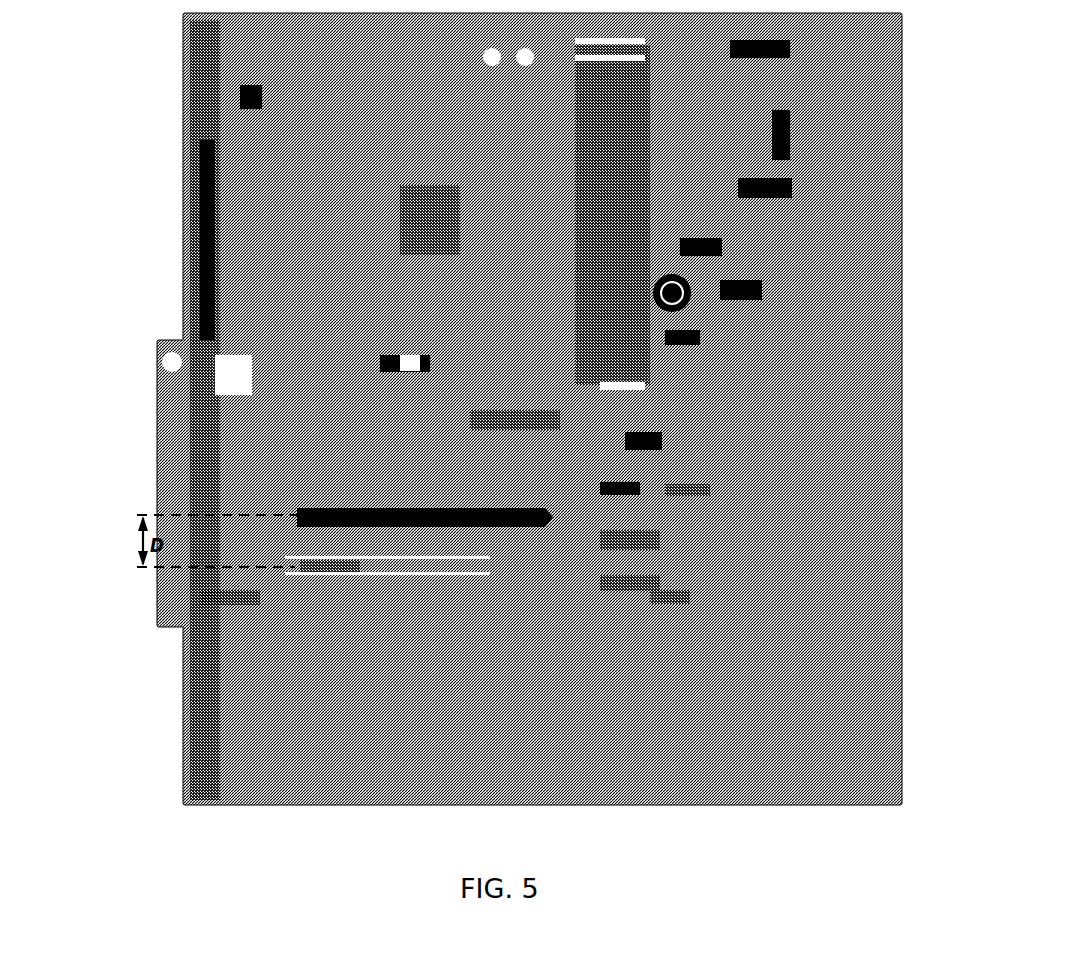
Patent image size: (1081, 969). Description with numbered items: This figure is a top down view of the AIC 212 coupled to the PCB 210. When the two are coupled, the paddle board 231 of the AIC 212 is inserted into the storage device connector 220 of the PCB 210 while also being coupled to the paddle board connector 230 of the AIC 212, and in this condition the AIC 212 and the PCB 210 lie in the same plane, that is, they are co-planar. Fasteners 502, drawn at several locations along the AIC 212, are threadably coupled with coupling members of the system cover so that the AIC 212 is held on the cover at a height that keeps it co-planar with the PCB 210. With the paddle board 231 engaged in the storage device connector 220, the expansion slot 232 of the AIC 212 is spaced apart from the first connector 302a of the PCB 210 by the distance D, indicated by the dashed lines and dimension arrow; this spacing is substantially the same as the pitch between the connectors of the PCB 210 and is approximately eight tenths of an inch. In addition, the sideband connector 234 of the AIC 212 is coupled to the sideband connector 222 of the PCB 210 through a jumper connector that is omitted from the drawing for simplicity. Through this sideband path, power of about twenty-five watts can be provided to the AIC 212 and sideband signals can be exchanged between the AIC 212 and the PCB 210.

The PCB 210 is at (850, 142).
The AIC 212 is at (257, 600).
The storage device connector 220 is at (635, 488).
The sideband connector 222 is at (710, 492).
The paddle board connector 230 is at (632, 588).
The paddle board 231 is at (652, 543).
The expansion slot 232 is at (331, 577).
The sideband connector 234 is at (682, 595).
The first connector 302a is at (420, 506).
The fasteners 502 is at (263, 575).